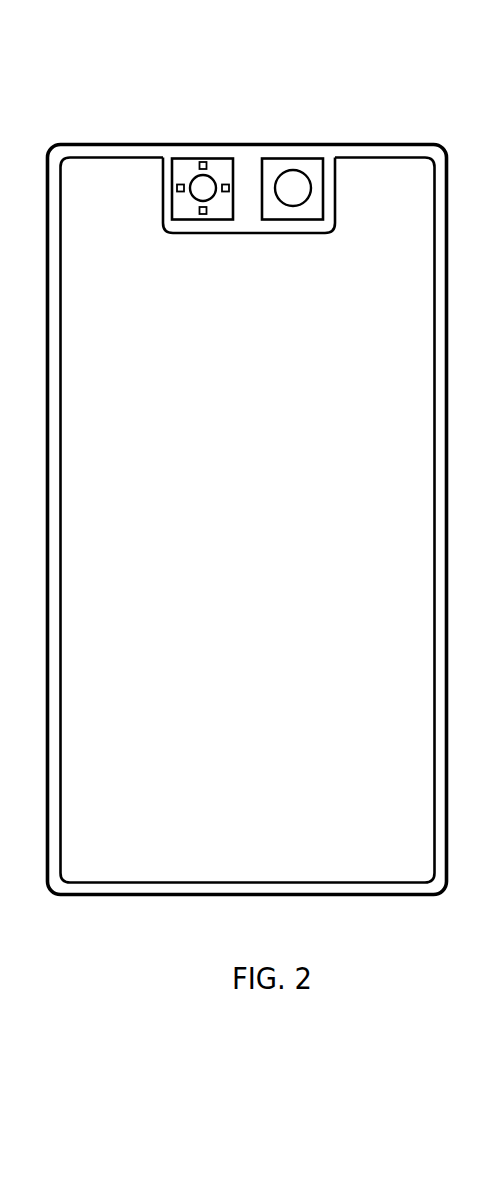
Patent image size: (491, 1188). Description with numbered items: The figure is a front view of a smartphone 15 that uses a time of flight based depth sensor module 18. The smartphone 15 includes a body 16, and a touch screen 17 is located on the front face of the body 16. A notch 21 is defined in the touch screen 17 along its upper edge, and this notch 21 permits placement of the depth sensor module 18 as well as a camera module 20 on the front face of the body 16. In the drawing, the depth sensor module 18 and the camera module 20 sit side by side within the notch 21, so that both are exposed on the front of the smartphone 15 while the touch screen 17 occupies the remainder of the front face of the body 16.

The smartphone 15 is at (248, 60).
The body 16 is at (90, 142).
The touch screen 17 is at (61, 208).
The depth sensor module 18 is at (188, 155).
The camera module 20 is at (277, 155).
The notch 21 is at (332, 158).